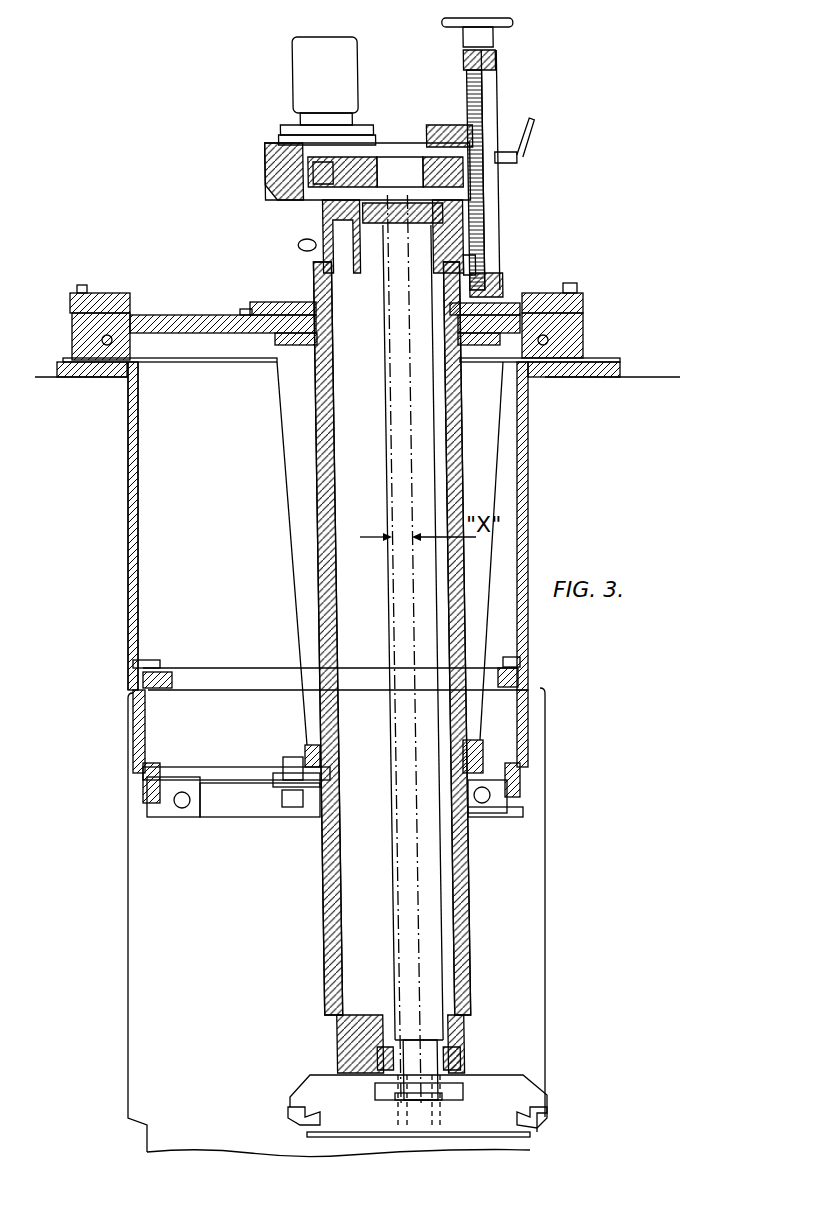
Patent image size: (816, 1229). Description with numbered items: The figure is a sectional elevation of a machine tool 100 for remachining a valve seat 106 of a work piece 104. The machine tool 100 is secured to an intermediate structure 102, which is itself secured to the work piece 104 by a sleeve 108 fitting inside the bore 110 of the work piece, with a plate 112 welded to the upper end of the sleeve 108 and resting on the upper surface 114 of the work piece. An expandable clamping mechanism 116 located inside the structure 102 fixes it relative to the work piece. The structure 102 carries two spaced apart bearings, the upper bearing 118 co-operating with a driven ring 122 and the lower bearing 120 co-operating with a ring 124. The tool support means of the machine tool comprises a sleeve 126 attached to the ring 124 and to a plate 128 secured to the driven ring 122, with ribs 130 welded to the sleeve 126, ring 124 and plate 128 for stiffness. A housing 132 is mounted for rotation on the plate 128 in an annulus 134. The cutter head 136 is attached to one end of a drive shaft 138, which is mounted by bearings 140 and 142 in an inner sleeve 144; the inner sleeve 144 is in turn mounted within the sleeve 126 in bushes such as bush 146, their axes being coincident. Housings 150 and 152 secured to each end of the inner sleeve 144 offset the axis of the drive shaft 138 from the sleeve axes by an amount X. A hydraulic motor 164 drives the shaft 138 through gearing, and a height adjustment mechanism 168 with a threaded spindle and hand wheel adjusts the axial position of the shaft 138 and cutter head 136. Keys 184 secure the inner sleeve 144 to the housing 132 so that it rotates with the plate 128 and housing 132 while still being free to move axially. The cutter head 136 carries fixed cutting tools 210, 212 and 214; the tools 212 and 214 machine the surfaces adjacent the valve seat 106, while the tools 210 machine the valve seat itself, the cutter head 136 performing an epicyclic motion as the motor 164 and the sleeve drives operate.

The machine tool 100 is at (552, 219).
The intermediate structure 102 is at (148, 468).
The work piece 104 is at (136, 958).
The valve seat 106 is at (147, 1132).
The sleeve 108 is at (140, 549).
The bore 110 is at (128, 571).
The plate 112 is at (607, 360).
The upper surface 114 is at (668, 375).
The expandable clamping mechanism 116 is at (192, 655).
The upper bearing 118 is at (112, 362).
The lower bearing 120 is at (178, 818).
The driven ring 122 is at (129, 344).
The ring 124 is at (228, 820).
The sleeve 126 is at (318, 497).
The plate 128 is at (187, 320).
The ribs 130 is at (292, 436).
The housing 132 is at (284, 303).
The annulus 134 is at (247, 302).
The cutter head 136 is at (482, 1112).
The drive shaft 138 is at (438, 951).
The bearing 140 is at (458, 1050).
The bearing 142 is at (445, 232).
The inner sleeve 144 is at (462, 423).
The bush 146 is at (320, 380).
The housing 150 is at (328, 1048).
The housing 152 is at (322, 216).
The hydraulic motor 164 is at (345, 50).
The height adjustment mechanism 168 is at (508, 103).
The keys 184 is at (316, 272).
The cutting tools 210 is at (292, 1126).
The cutting tool 212 is at (290, 1116).
The cutting tool 214 is at (522, 1130).